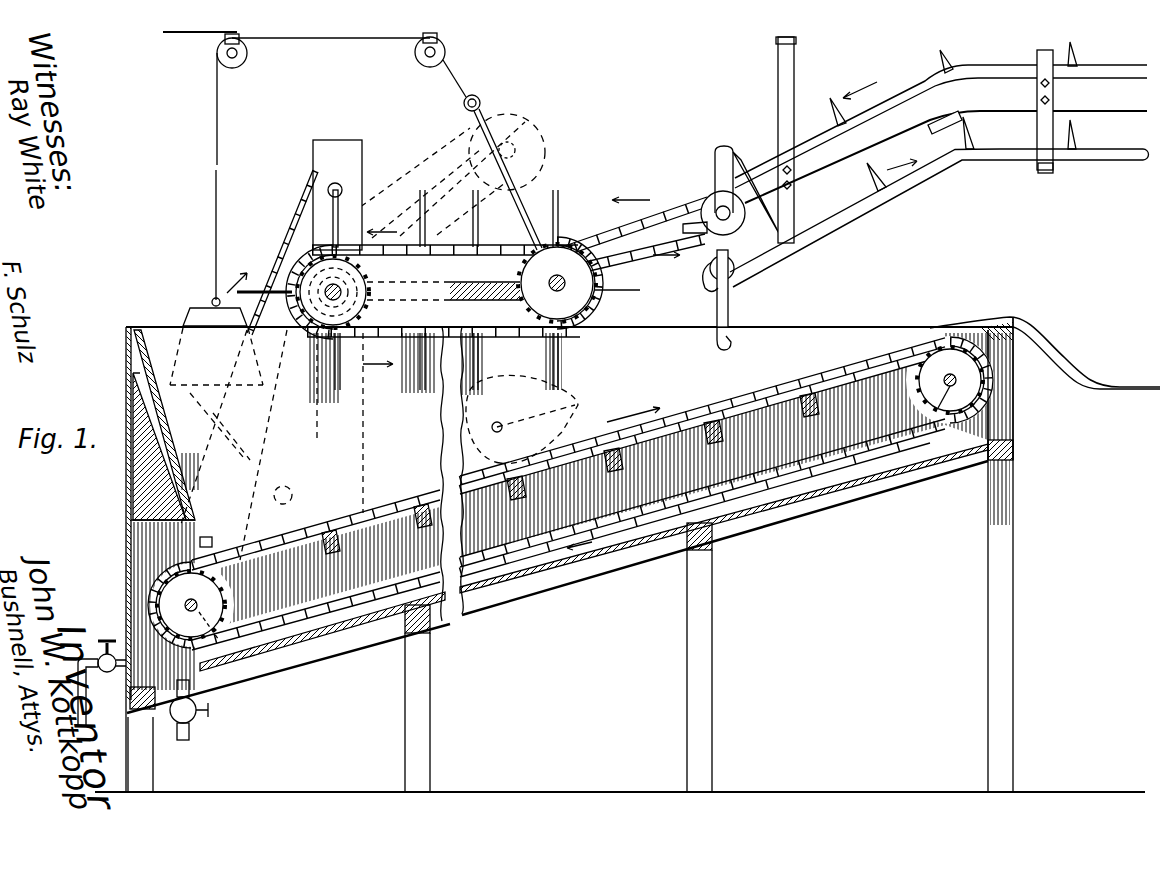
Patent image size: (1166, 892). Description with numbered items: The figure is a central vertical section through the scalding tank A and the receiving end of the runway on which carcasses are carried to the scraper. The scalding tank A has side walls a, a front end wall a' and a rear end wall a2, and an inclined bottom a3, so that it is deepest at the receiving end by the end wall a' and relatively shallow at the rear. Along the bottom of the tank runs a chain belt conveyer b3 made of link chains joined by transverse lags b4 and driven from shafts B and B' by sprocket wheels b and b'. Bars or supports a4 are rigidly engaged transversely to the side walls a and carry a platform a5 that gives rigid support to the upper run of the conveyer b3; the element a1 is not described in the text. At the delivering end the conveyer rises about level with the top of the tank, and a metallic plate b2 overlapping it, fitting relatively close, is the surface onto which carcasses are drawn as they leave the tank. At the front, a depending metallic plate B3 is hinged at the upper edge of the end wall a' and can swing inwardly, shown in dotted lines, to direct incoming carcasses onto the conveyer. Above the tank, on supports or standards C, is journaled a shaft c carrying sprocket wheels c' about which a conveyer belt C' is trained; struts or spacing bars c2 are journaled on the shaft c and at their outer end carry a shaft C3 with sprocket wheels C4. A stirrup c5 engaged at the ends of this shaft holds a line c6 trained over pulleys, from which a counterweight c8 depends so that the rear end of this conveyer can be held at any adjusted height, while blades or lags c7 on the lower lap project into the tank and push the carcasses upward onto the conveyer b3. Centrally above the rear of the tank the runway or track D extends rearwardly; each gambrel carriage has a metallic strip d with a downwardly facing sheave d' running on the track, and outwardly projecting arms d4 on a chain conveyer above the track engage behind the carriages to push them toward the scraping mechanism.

The scalding tank A is at (620, 555).
The side walls a is at (569, 504).
The end wall a' is at (111, 559).
The end wall a2 is at (1013, 389).
The inclined bottom a3 is at (613, 563).
The bars or supports a4 is at (630, 462).
The platform a5 is at (457, 487).
The conveyor apron a1 is at (327, 517).
The shaft B is at (198, 636).
The shaft B' is at (952, 430).
The sprocket wheel b is at (316, 637).
The sprocket wheel b' is at (950, 451).
The metallic plate b2 is at (995, 318).
The chain belt conveyer b3 is at (790, 487).
The depending metallic plate B3 is at (128, 481).
The transverse lags b4 is at (127, 580).
The supports or standards C is at (338, 171).
The shaft c is at (303, 290).
The sprocket wheels c' is at (282, 252).
The struts or spacing bars c2 is at (540, 197).
The shaft C3 is at (565, 286).
The sprocket wheels C4 is at (645, 248).
The conveyer belt C' is at (630, 215).
The stirrup c5 is at (550, 137).
The line c6 is at (427, 66).
The blades or lags c7 is at (480, 291).
The counterweight c8 is at (289, 179).
The metallic strip d is at (723, 286).
The sheave or roller d' is at (741, 191).
The outwardly projecting arms d4 is at (941, 122).
The runway or track D is at (1115, 165).